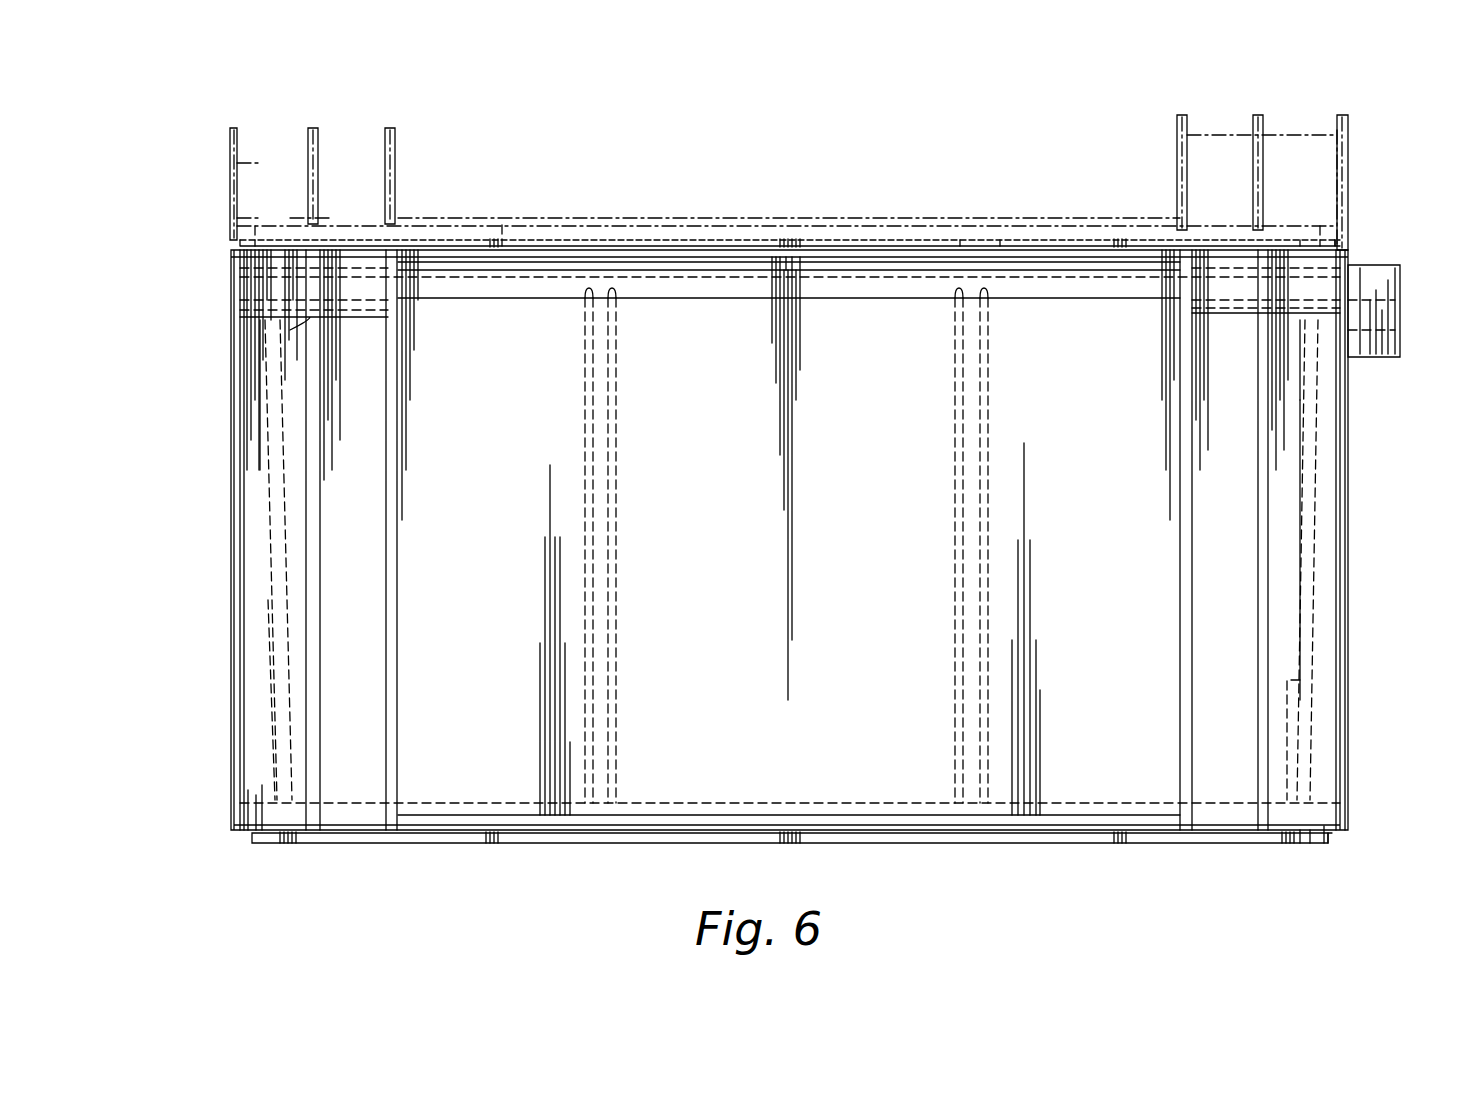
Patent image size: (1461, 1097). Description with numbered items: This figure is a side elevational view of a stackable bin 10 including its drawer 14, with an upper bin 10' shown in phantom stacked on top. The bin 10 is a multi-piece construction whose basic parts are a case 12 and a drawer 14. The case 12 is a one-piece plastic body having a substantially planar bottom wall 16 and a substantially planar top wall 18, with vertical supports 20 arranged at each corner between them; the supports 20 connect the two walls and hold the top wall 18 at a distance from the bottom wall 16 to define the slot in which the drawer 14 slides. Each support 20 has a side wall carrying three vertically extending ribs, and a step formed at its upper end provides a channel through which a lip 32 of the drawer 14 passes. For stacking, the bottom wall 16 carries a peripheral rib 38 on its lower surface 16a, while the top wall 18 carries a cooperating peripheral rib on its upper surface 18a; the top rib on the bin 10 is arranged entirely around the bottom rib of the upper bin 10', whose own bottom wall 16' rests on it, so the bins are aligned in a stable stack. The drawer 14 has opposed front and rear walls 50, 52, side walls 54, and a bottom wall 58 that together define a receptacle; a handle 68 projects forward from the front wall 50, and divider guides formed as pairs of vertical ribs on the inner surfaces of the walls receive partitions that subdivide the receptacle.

The stackable bin 10 is at (729, 540).
The top stacked bin 10' is at (733, 176).
The case 12 is at (230, 460).
The drawer 14 is at (657, 270).
The bottom wall 16 is at (792, 859).
The bottom wall of top stacked bin 16' is at (479, 208).
The lower surface 16a is at (1335, 835).
The top wall 18 is at (848, 250).
The upper surface 18a is at (918, 245).
The vertical support 20 is at (1377, 540).
The lip 32 is at (708, 285).
The bottom peripheral rib 38 is at (1295, 856).
The front wall 50 is at (1320, 442).
The rear wall 52 is at (270, 518).
The side wall 54 is at (890, 589).
The bottom wall 58 is at (683, 818).
The handle 68 is at (1400, 287).